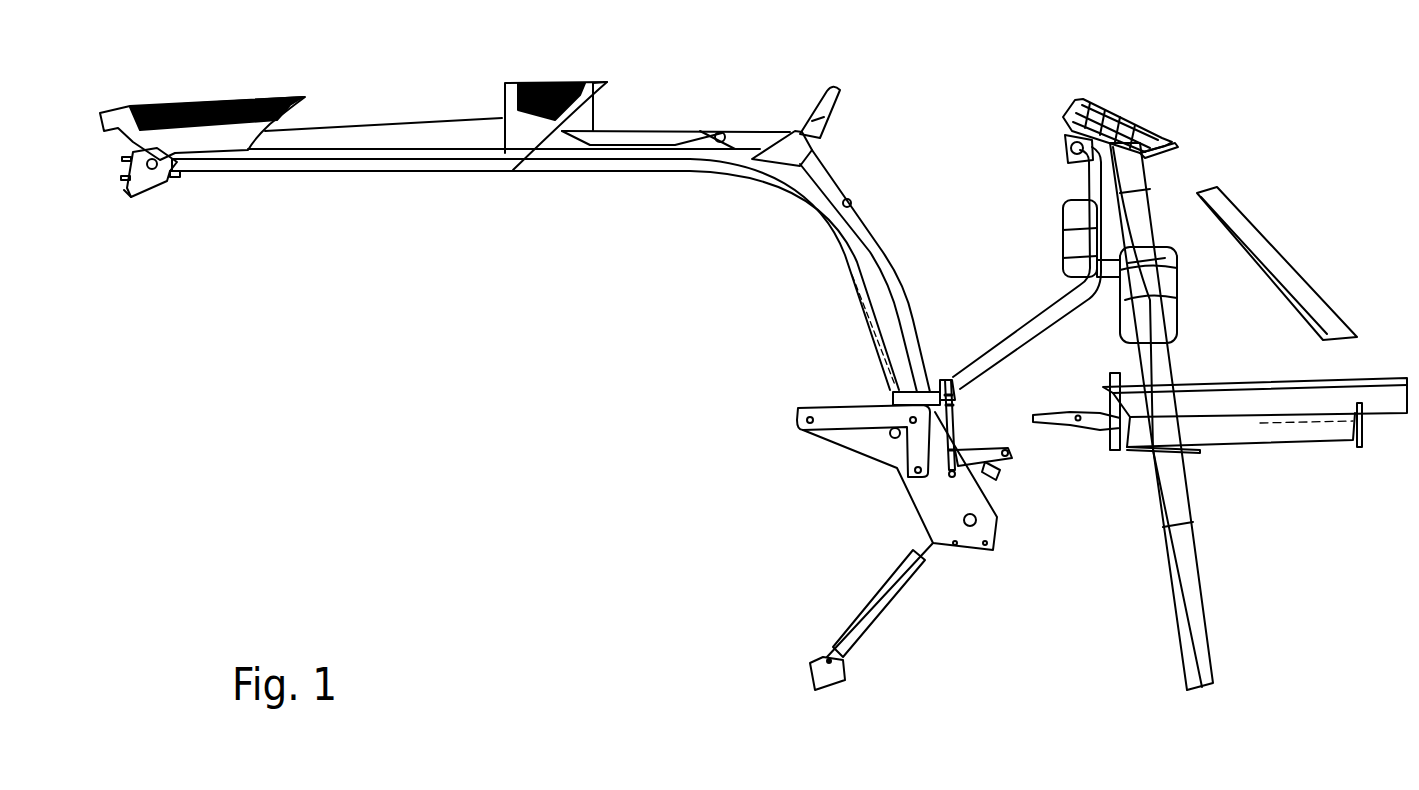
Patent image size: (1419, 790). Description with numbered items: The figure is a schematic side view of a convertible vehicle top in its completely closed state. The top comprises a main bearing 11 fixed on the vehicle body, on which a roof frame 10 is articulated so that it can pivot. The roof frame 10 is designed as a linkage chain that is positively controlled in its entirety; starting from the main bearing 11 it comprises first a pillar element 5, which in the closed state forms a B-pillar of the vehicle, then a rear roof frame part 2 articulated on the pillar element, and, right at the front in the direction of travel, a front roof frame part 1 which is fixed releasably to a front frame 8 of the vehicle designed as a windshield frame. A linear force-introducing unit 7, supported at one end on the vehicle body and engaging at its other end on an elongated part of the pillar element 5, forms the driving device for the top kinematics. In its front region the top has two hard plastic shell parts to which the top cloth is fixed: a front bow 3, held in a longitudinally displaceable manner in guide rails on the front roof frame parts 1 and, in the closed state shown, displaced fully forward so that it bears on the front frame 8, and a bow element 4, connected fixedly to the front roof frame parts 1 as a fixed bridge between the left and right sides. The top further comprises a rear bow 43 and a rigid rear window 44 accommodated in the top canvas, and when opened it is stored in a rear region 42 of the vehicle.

The front roof frame part 1 is at (290, 160).
The rear roof frame part 2 is at (647, 165).
The front bow 3 is at (202, 93).
The bow element 4 is at (589, 97).
The pillar element 5 is at (863, 247).
The linear force-introducing unit 7 is at (887, 598).
The front frame 8 is at (140, 185).
The roof frame 10 is at (668, 310).
The main bearing 11 is at (860, 447).
The rear region 42 is at (1241, 521).
The rear bow 43 is at (1130, 108).
The rigid rear window 44 is at (1264, 250).